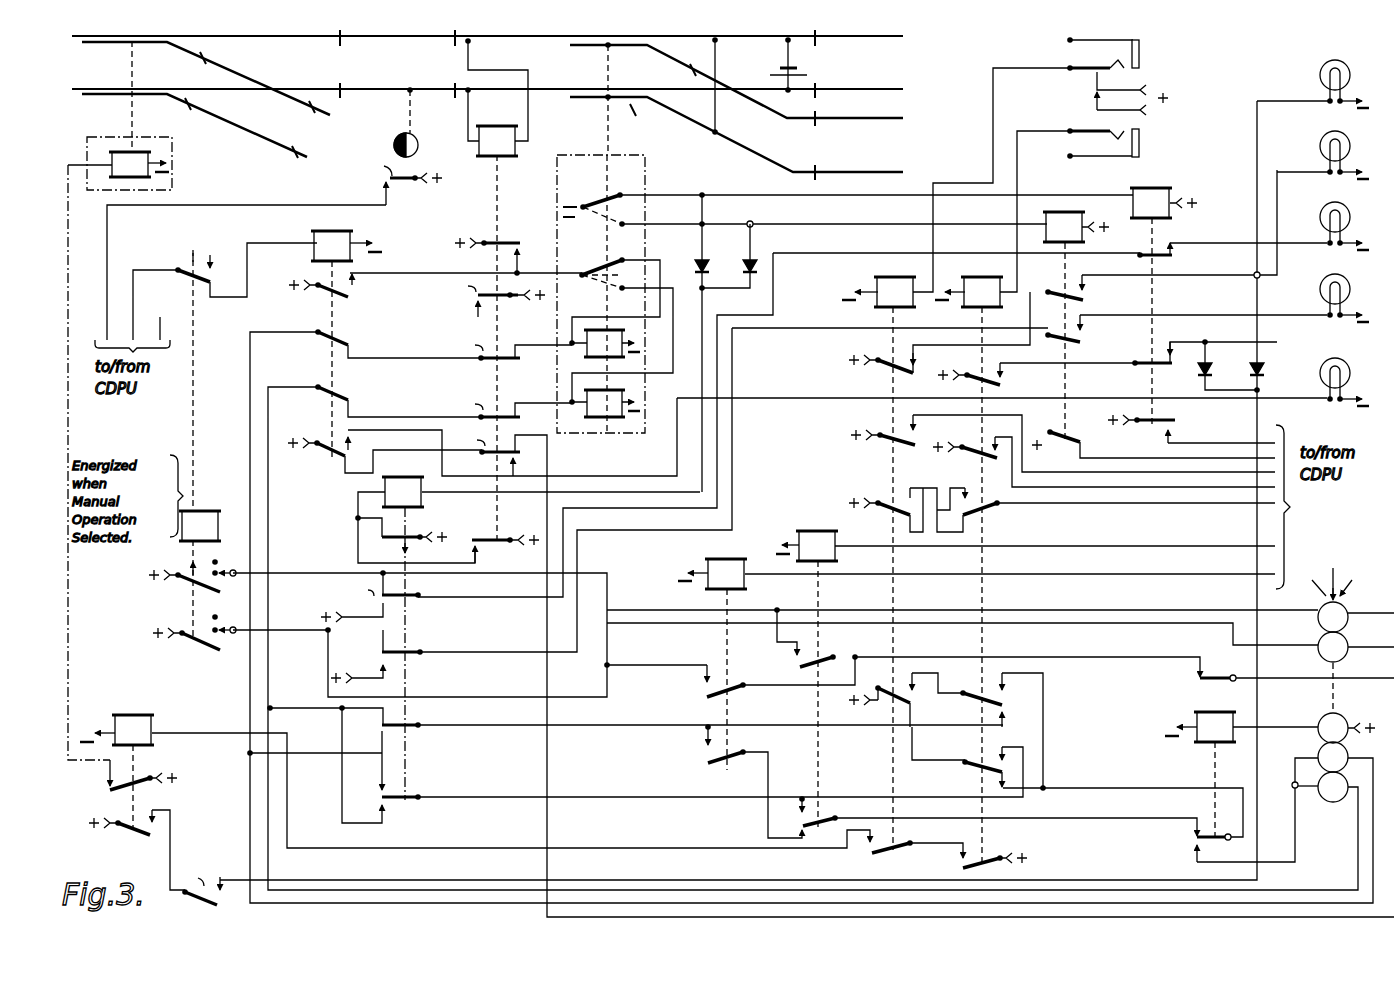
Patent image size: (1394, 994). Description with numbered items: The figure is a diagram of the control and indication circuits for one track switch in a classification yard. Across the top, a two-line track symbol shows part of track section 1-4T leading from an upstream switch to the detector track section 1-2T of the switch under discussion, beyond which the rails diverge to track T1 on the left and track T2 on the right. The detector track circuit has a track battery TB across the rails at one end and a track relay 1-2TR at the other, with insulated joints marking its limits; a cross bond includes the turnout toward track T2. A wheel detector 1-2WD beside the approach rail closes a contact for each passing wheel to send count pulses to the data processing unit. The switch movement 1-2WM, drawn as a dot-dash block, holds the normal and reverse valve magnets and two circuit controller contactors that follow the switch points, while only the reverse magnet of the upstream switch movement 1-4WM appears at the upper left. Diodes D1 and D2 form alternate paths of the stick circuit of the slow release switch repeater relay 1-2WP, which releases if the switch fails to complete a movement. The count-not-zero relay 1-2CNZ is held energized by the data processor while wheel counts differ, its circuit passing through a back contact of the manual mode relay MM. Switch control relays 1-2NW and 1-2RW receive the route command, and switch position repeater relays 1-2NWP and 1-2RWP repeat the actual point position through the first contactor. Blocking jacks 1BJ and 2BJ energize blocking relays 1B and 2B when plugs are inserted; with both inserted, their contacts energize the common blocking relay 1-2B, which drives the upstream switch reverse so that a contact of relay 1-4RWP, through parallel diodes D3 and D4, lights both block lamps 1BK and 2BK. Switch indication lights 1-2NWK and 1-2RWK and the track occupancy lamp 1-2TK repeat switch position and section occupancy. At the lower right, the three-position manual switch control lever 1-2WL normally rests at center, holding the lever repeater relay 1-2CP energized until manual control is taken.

The track section 1-4T is at (487, 94).
The detector track section 1-2T is at (724, 111).
The track 1 T1 is at (857, 67).
The track 2 T2 is at (862, 145).
The track battery TB is at (772, 68).
The switch movement 1-4WM is at (172, 154).
The wheel detector 1-2WD is at (393, 146).
The track relay 1-2TR is at (923, 477).
The switch movement 1-2WM is at (655, 152).
The diode D1 is at (696, 258).
The diode D2 is at (746, 258).
The diode D3 is at (1197, 372).
The diode D4 is at (1265, 375).
The manual mode relay MM is at (225, 452).
The count-not-zero relay 1-2CNZ is at (811, 558).
The switch repeater relay 1-2WP is at (415, 628).
The common blocking relay 1-2B is at (475, 794).
The reverse switch position repeater relay 1-4RWP is at (205, 878).
The blocking relay 1B is at (1058, 463).
The blocking relay 2B is at (1104, 499).
The reverse switch position repeater relay 1-2RWP is at (1178, 314).
The normal switch position repeater relay 1-2NWP is at (1163, 304).
The blocking jack 1BJ is at (1139, 54).
The blocking jack 2BJ is at (1139, 143).
The track block light 1BK is at (1313, 73).
The track block light 2BK is at (1323, 143).
The normal switch indication light 1-2NWK is at (1328, 215).
The reverse switch indication light 1-2RWK is at (1328, 287).
The track occupancy indication lamp 1-2TK is at (1333, 372).
The reverse switch control relay 1-2RW is at (976, 690).
The normal switch control relay 1-2NW is at (1023, 680).
The lever repeater relay 1-2CP is at (1198, 756).
The manual switch control lever 1-2WL is at (1343, 669).